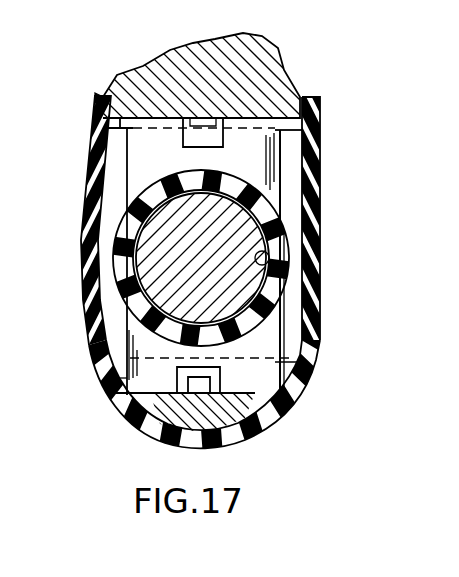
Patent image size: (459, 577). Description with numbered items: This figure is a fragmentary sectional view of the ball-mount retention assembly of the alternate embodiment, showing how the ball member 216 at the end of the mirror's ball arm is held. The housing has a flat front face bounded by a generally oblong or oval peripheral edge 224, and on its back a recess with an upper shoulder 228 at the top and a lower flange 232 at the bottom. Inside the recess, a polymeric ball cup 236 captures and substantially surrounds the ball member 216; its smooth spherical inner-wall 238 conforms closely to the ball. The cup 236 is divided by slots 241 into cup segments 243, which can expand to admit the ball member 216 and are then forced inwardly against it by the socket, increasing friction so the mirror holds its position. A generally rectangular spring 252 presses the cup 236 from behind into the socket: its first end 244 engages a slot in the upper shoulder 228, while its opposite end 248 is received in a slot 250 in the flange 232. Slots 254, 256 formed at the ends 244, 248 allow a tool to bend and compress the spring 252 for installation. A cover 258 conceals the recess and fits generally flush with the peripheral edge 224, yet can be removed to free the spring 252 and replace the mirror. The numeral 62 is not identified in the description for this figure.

The assembly 62 is at (0, 22).
The first end 244 is at (157, 137).
The slot 254 is at (200, 143).
The upper shoulder 228 is at (120, 131).
The ball cup 236 is at (117, 242).
The spring 252 is at (318, 153).
The peripheral edge 224 is at (233, 428).
The lower flange 232 is at (147, 428).
The spherical inner-wall 238 is at (300, 266).
The ball member 216 is at (257, 277).
The slots 241 is at (150, 200).
The cup segments 243 is at (193, 181).
The cover 258 is at (310, 340).
The slot 256 is at (280, 417).
The opposite end 248 is at (92, 371).
The slot 250 is at (110, 391).